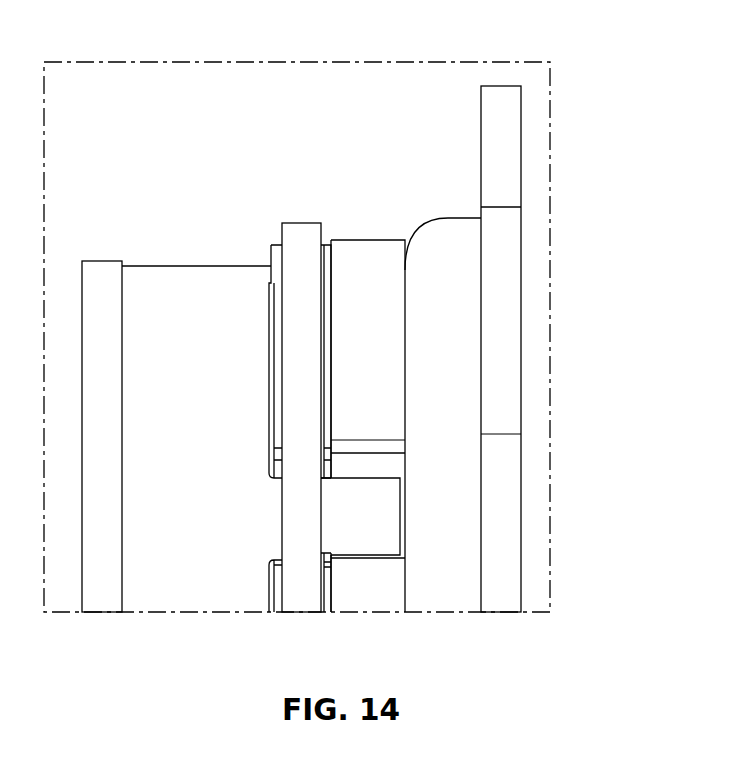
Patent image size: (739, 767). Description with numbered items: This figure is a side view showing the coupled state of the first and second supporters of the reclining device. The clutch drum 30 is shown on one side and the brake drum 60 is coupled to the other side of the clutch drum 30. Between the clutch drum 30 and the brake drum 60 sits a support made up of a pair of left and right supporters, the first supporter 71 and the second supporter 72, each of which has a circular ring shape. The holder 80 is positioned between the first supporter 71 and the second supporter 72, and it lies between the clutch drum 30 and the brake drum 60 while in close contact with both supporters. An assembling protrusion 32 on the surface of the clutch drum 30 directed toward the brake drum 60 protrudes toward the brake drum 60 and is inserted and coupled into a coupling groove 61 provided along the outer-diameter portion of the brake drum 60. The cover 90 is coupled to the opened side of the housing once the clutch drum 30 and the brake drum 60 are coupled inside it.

The clutch drum 30 is at (174, 258).
The first supporter 71 is at (264, 236).
The holder 80 is at (298, 210).
The second supporter 72 is at (330, 232).
The brake drum 60 is at (471, 359).
The assembling protrusion 32 is at (368, 515).
The coupling groove 61 is at (375, 553).
The cover 90 is at (530, 109).